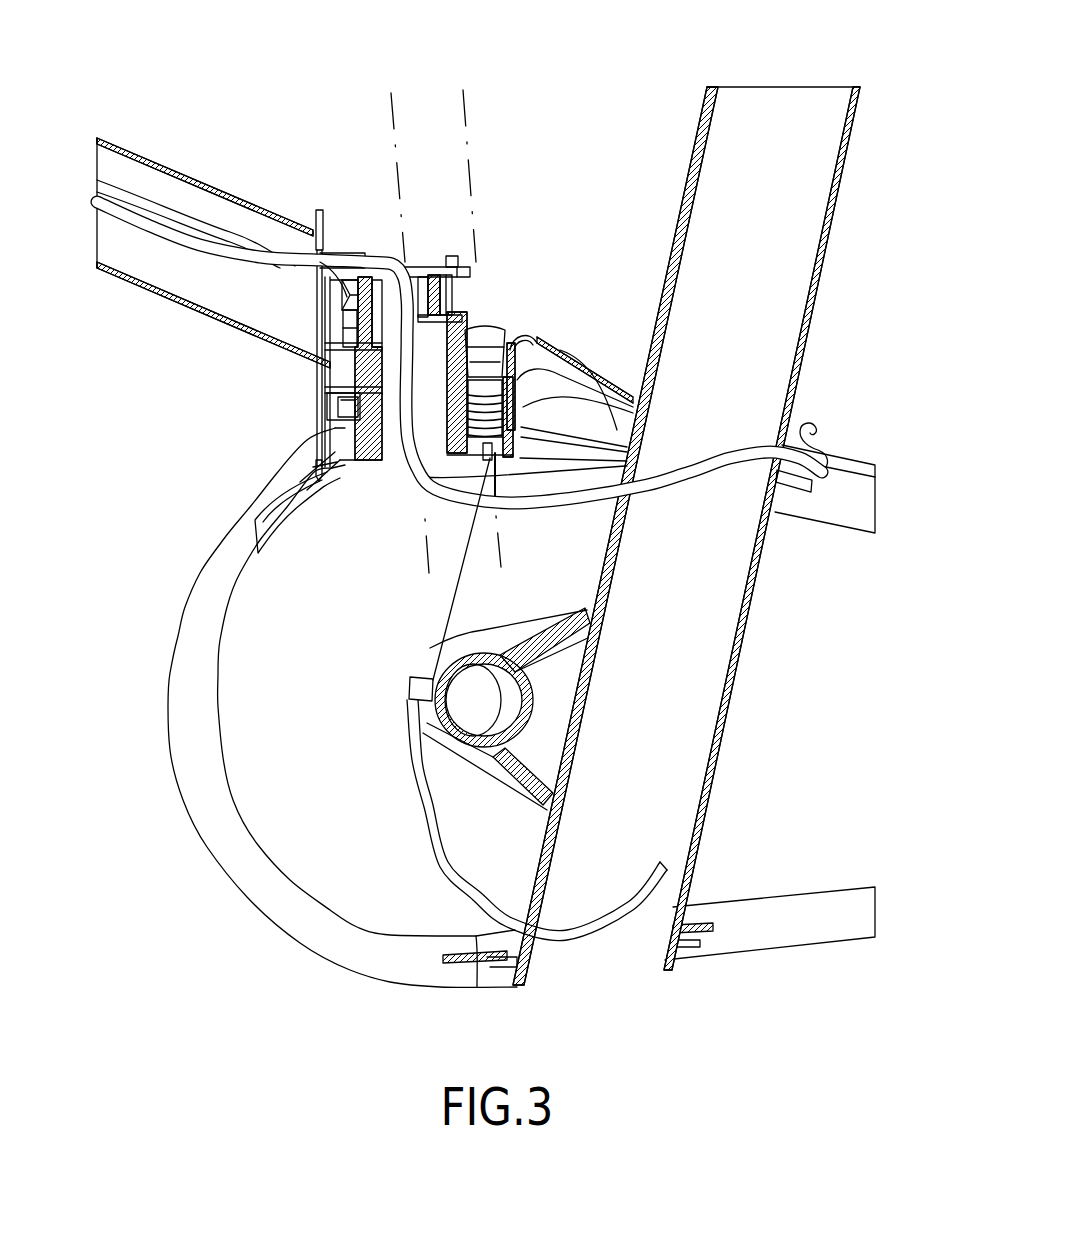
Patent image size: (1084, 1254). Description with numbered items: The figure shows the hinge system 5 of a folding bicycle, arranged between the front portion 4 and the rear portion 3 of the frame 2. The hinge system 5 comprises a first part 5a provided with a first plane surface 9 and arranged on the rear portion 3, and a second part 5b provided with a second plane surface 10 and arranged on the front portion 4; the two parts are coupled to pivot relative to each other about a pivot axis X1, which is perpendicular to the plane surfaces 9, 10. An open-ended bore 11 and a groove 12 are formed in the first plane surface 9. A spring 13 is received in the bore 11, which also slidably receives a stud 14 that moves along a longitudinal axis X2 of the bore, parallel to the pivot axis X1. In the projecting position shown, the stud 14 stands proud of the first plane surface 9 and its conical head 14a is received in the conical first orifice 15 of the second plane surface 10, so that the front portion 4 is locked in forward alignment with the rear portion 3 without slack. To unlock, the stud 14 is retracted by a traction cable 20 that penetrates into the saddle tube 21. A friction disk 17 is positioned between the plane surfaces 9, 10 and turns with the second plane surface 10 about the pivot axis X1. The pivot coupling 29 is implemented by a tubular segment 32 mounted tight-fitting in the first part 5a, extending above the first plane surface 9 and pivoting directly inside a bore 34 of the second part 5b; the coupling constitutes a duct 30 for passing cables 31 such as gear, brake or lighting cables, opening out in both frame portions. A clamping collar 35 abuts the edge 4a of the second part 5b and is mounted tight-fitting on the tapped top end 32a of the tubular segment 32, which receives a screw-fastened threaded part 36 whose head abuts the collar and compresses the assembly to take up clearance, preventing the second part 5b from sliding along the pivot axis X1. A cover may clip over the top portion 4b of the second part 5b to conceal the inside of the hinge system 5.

The frame 2 is at (562, 68).
The rear portion 3 is at (690, 536).
The front portion 4 is at (213, 232).
The edge 4a is at (343, 306).
The top portion 4b is at (318, 208).
The hinge system 5 is at (493, 314).
The first part 5a is at (482, 325).
The second part 5b is at (478, 268).
The first plane surface 9 is at (338, 418).
The second plane surface 10 is at (330, 373).
The open-ended bore 11 is at (537, 390).
The groove 12 is at (357, 420).
The spring 13 is at (507, 455).
The stud 14 is at (526, 389).
The head 14a is at (500, 345).
The first orifice 15 is at (462, 360).
The friction disk 17 is at (325, 403).
The traction cable 20 is at (440, 610).
The saddle tube 21 is at (773, 268).
The pivot coupling 29 is at (443, 258).
The duct 30 is at (428, 343).
The cables 31 is at (185, 220).
The tubular segment 32 is at (459, 343).
The top end 32a is at (347, 297).
The bore 34 is at (345, 343).
The clamping collar 35 is at (356, 278).
The threaded part 36 is at (455, 258).
The pivot axis X1 is at (390, 100).
The longitudinal axis X2 is at (465, 105).